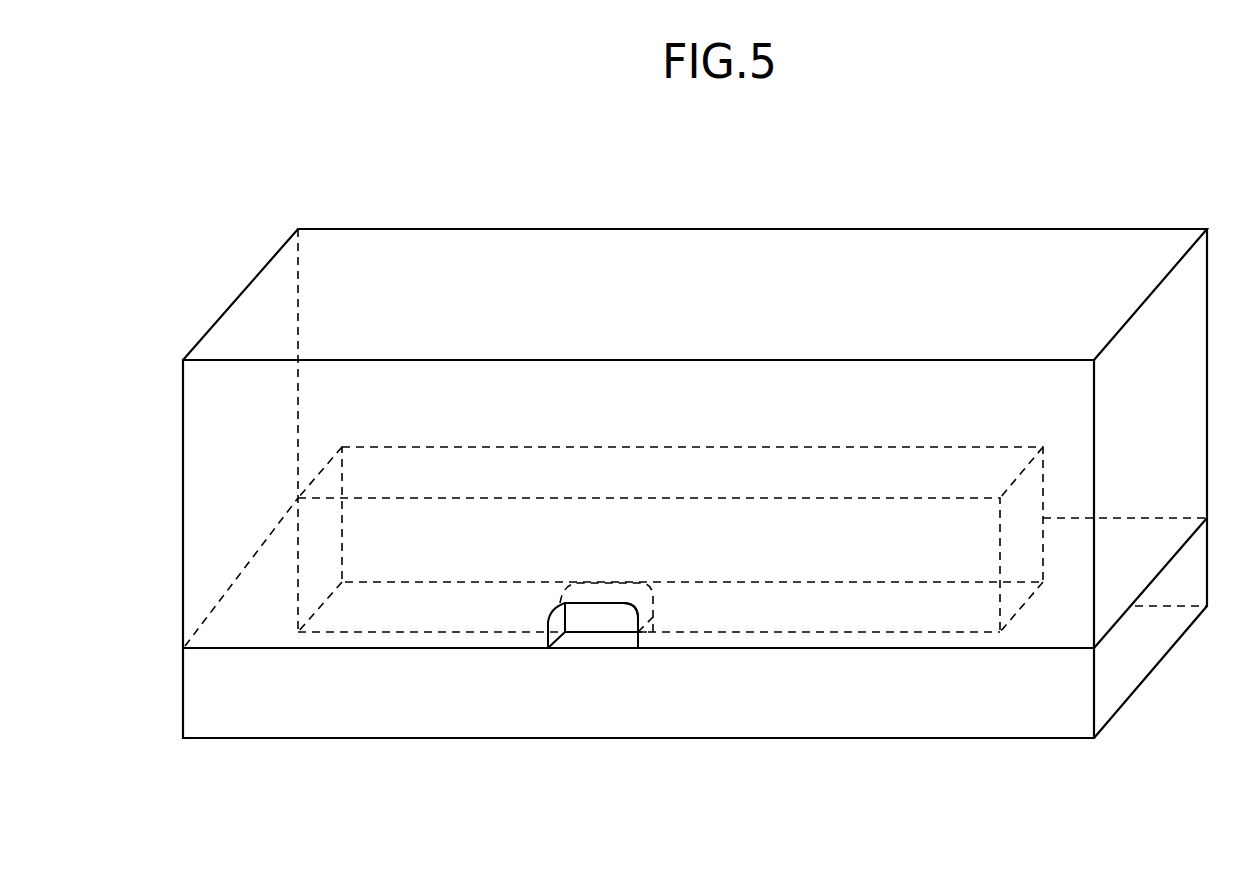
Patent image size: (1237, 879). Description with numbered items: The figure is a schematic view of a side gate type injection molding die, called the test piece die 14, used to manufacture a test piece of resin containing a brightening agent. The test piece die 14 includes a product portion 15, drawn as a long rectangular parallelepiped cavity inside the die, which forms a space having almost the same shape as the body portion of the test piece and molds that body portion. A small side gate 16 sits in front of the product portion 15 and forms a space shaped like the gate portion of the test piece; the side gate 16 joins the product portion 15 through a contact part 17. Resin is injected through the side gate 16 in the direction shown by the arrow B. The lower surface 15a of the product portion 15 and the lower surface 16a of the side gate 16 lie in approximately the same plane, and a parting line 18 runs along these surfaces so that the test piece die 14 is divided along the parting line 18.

The test piece die 14 is at (928, 197).
The product portion 15 is at (363, 470).
The lower surface of the product portion 15a is at (367, 618).
The side gate 16 is at (678, 690).
The lower surface of the side gate 16a is at (598, 640).
The contact part 17 is at (648, 615).
The parting line 18 is at (282, 650).
The injection direction B is at (558, 678).